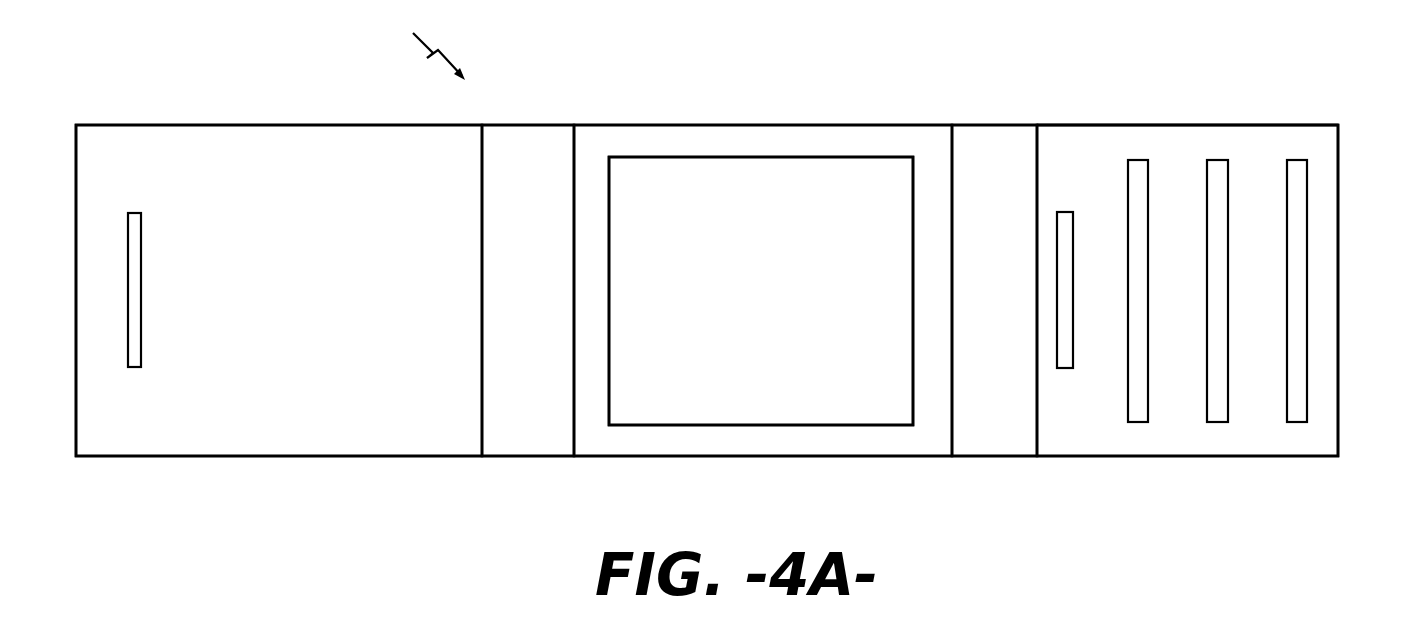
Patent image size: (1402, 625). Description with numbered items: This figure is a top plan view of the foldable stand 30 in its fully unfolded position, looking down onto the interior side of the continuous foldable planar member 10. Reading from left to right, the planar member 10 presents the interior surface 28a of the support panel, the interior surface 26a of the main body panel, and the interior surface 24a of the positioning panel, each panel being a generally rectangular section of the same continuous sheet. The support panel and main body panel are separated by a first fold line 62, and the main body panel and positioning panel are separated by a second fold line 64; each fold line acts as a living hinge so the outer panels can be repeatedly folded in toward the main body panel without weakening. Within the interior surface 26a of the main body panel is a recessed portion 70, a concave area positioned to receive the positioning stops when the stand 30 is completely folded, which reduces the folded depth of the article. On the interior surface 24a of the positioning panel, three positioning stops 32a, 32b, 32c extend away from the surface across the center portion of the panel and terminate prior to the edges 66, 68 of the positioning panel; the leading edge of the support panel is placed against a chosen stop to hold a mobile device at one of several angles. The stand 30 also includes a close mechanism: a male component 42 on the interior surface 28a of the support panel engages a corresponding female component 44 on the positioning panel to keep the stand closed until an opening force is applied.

The foldable planar member 10 is at (665, 140).
The interior surface of positioning panel 24a is at (1322, 287).
The interior surface of main body panel 26a is at (727, 432).
The interior surface of support panel 28a is at (262, 432).
The foldable stand 30 is at (676, 315).
The first positioning stop 32a is at (1138, 173).
The second positioning stop 32b is at (1218, 173).
The third positioning stop 32c is at (1297, 173).
The male component 42 is at (127, 223).
The female component 44 is at (1063, 223).
The first fold line 62 is at (513, 432).
The second fold line 64 is at (997, 432).
The edge of positioning panel 66 is at (1158, 123).
The edge of positioning panel 68 is at (1237, 458).
The recessed portion 70 is at (787, 195).